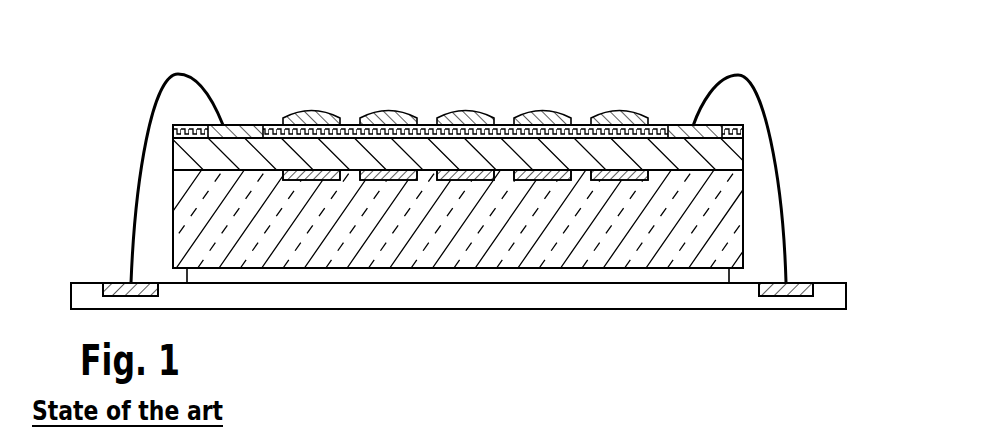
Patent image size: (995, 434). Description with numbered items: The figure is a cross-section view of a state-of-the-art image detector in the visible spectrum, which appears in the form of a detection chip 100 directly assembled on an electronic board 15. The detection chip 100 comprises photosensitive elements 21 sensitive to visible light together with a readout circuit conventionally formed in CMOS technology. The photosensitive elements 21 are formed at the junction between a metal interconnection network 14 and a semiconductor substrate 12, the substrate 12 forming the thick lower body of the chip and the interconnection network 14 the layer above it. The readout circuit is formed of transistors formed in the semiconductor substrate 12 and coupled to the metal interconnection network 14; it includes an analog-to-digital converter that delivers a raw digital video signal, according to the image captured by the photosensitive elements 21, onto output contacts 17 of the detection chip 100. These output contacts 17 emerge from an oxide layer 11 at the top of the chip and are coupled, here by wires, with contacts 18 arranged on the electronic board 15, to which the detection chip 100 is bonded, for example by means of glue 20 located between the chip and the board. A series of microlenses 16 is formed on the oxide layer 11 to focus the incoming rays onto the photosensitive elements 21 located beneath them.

The detection chip 100 is at (766, 31).
The oxide layer 11 is at (500, 123).
The semiconductor substrate 12 is at (282, 242).
The metal interconnection network 14 is at (425, 157).
The electronic board 15 is at (440, 295).
The microlens 16 is at (317, 123).
The output contacts 17 is at (683, 133).
The contacts 18 is at (800, 287).
The glue 20 is at (380, 273).
The photosensitive elements 21 is at (468, 182).